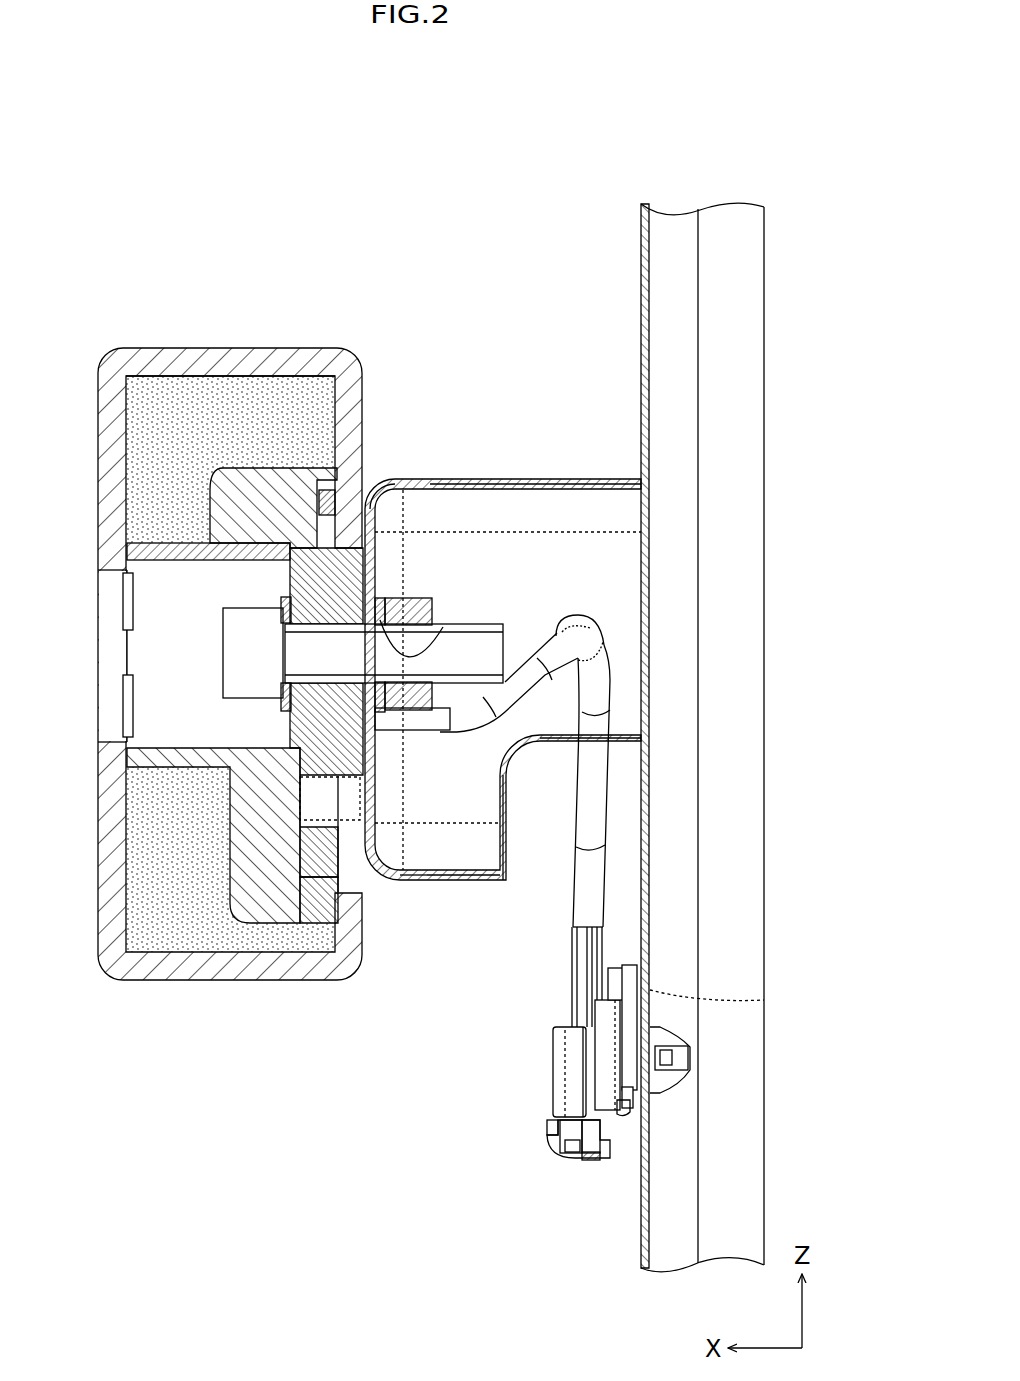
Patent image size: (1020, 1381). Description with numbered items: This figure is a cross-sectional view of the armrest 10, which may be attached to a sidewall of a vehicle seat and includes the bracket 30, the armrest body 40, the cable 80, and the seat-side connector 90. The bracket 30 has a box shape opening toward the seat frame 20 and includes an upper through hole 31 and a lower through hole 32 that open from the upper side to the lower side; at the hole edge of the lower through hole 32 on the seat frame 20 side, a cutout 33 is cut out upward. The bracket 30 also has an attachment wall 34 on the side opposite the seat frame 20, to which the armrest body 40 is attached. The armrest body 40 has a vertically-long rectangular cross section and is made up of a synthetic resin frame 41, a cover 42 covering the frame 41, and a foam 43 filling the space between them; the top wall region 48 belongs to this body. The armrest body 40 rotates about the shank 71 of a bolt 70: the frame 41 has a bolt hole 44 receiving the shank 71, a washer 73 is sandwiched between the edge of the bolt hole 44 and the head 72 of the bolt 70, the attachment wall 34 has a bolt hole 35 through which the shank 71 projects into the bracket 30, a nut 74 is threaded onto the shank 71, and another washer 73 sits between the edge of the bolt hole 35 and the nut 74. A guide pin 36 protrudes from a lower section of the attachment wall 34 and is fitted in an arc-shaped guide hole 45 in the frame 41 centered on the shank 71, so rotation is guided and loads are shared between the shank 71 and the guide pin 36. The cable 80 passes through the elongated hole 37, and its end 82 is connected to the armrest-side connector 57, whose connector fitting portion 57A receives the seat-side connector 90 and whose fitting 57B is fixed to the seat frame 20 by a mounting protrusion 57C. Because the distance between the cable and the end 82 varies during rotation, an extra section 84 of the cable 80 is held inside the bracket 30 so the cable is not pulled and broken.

The armrest 10 is at (398, 185).
The seat frame 20 is at (612, 235).
The bracket 30 is at (522, 405).
The upper through hole 31 is at (556, 480).
The lower through hole 32 is at (458, 878).
The cutout 33 is at (505, 816).
The attachment wall 34 is at (406, 870).
The bolt hole 35 is at (400, 655).
The guide pin 36 is at (352, 803).
The elongated hole 37 is at (398, 486).
The armrest body 40 is at (243, 302).
The frame 41 is at (173, 552).
The cover 42 is at (292, 360).
The foam 43 is at (132, 440).
The bolt hole 44 is at (325, 640).
The guide hole 45 is at (323, 862).
The housing top wall 48 is at (208, 350).
The armrest-side connector 57 is at (545, 1040).
The connector fitting portion 57A is at (577, 1082).
The fitting 57B is at (630, 978).
The mounting protrusion 57C is at (685, 1053).
The bolt 70 is at (205, 660).
The shank 71 is at (492, 655).
The head 72 is at (237, 627).
The washer 73 is at (380, 605).
The nut 74 is at (418, 612).
The cable 80 is at (620, 666).
The end 82 is at (590, 889).
The extra section 84 is at (590, 622).
The seat-side connector 90 is at (555, 1168).